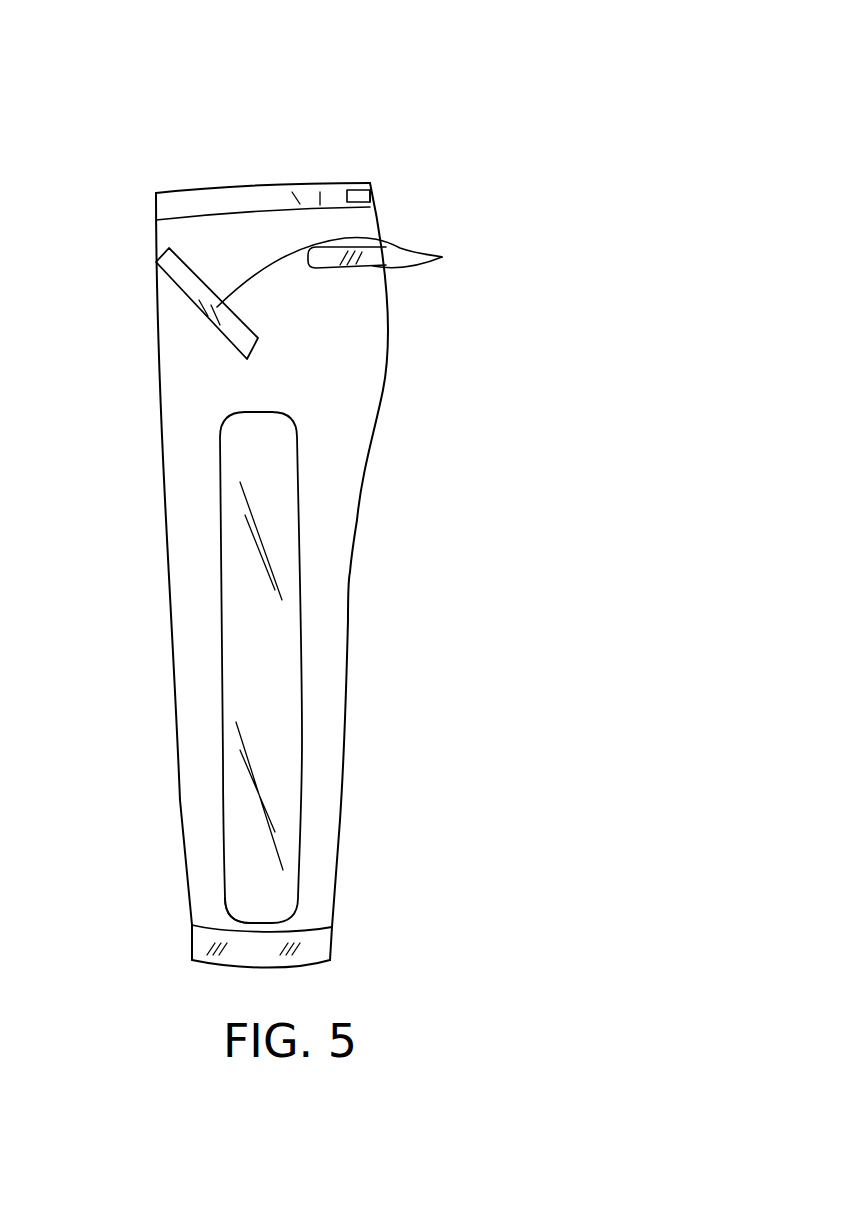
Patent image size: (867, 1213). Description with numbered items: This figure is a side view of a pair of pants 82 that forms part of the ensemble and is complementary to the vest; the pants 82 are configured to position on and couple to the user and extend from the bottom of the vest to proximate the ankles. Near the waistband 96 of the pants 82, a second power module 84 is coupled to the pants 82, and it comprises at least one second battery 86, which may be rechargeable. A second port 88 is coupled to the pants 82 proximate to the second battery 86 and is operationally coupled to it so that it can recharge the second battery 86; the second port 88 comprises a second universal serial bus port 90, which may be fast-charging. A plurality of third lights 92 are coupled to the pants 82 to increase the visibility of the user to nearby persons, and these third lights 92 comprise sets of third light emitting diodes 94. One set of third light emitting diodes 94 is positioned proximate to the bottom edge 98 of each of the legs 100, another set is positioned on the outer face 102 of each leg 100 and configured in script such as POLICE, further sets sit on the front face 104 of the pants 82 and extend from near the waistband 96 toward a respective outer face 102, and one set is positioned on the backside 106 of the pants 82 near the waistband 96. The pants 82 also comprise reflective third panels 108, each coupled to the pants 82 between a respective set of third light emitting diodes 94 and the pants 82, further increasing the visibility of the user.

The pants 82 is at (462, 98).
The second power module 84 is at (292, 185).
The second battery 86 is at (319, 188).
The second port 88 is at (360, 187).
The second universal serial bus port 90 is at (372, 193).
The third lights 92 is at (288, 703).
The third light emitting diodes 94 is at (442, 257).
The waistband 96 is at (208, 207).
The bottom edge 98 is at (220, 964).
The legs 100 is at (327, 592).
The outer face 102 is at (310, 478).
The front face 104 is at (175, 640).
The backside 106 is at (390, 348).
The third panels 108 is at (210, 937).